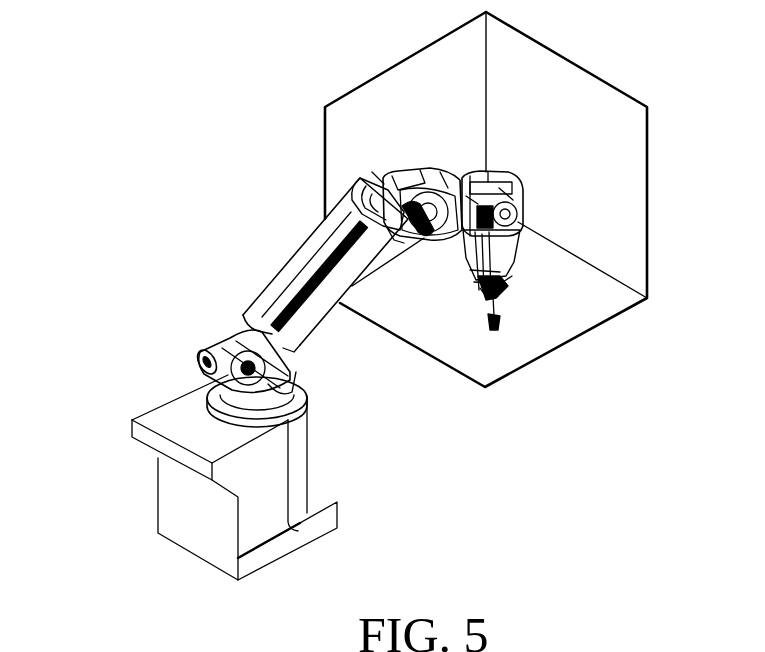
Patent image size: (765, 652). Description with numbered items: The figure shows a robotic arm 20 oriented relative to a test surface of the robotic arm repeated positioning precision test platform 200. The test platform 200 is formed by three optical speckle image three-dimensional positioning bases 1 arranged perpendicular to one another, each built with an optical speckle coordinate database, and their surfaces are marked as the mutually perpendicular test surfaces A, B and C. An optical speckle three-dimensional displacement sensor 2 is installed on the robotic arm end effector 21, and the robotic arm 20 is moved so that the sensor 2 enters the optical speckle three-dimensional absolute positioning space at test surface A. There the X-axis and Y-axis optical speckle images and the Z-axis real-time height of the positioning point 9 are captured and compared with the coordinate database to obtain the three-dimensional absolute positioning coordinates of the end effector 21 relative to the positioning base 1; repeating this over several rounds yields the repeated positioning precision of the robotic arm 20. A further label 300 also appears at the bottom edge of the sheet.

The robotic arm repeated positioning precision test platform 200 is at (125, 51).
The pedestal 300 is at (144, 647).
The optical speckle image three-dimensional positioning base 1 is at (518, 79).
The robotic arm 20 is at (263, 297).
The robotic arm end effector 21 is at (461, 274).
The optical speckle three-dimensional displacement sensor 2 is at (510, 292).
The positioning point 9 is at (497, 324).